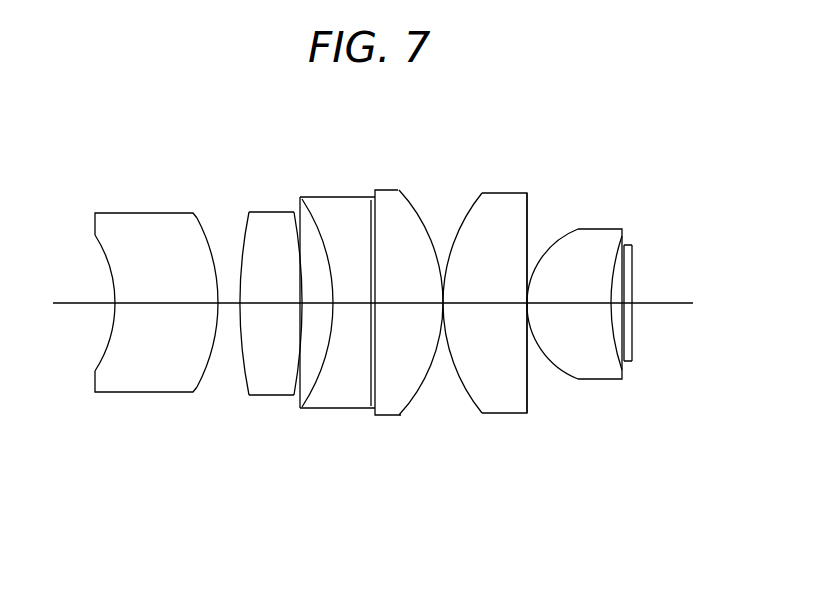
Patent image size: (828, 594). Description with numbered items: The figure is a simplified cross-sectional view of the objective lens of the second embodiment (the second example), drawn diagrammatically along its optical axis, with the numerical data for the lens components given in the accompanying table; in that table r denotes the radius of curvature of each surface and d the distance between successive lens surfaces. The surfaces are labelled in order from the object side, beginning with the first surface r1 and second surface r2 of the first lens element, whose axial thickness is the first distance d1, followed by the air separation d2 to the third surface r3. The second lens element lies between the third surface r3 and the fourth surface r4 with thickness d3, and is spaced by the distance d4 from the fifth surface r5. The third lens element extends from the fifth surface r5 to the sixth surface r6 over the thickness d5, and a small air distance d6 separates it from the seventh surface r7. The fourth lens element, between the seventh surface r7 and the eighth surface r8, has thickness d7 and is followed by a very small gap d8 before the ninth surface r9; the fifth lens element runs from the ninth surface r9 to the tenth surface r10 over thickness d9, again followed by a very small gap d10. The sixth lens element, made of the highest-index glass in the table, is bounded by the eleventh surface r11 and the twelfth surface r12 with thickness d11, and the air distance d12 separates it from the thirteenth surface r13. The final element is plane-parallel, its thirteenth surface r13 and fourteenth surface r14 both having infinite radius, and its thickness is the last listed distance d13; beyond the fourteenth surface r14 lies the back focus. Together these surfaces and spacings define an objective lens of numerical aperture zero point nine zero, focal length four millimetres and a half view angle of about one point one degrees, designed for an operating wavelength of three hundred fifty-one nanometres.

The first lens surface r1 is at (100, 258).
The second lens surface r2 is at (207, 230).
The third lens surface r3 is at (243, 232).
The fourth lens surface r4 is at (298, 236).
The fifth lens surface r5 is at (308, 232).
The sixth lens surface r6 is at (370, 230).
The seventh lens surface r7 is at (373, 236).
The eighth lens surface r8 is at (425, 222).
The ninth lens surface r9 is at (470, 200).
The tenth lens surface r10 is at (530, 218).
The eleventh lens surface r11 is at (563, 233).
The twelfth lens surface r12 is at (603, 260).
The thirteenth surface r13 is at (621, 232).
The fourteenth surface r14 is at (634, 270).
The first surface distance d1 is at (158, 392).
The second surface distance d2 is at (228, 304).
The third surface distance d3 is at (280, 393).
The fourth surface distance d4 is at (313, 305).
The fifth surface distance d5 is at (348, 305).
The sixth surface distance d6 is at (406, 480).
The seventh surface distance d7 is at (407, 305).
The eighth surface distance d8 is at (443, 322).
The ninth surface distance d9 is at (490, 305).
The tenth surface distance d10 is at (527, 322).
The eleventh surface distance d11 is at (582, 307).
The twelfth surface distance d12 is at (622, 372).
The thirteenth surface distance d13 is at (633, 312).